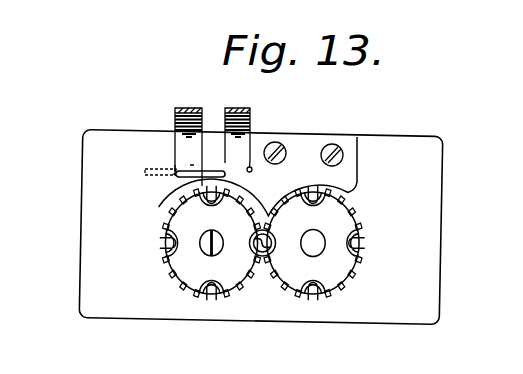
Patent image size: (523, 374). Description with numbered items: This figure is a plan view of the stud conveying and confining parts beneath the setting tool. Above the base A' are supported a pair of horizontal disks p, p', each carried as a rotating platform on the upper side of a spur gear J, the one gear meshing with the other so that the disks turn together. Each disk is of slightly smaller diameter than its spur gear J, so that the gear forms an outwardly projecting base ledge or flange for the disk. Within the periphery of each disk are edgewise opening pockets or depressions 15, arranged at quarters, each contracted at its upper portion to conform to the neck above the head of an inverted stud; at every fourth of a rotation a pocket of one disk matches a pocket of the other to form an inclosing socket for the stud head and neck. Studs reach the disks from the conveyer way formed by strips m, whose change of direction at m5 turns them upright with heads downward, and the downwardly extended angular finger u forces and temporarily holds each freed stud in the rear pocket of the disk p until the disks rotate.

The base A' is at (243, 227).
The coil spring m is at (210, 113).
The change of direction of the guideway-forming strips m5 is at (290, 108).
The downwardly extended angular finger u is at (177, 172).
The horizontal disk P is at (185, 247).
The horizontal disk P' is at (330, 240).
The spur gear J is at (178, 282).
The pocket or depression 15 is at (160, 237).